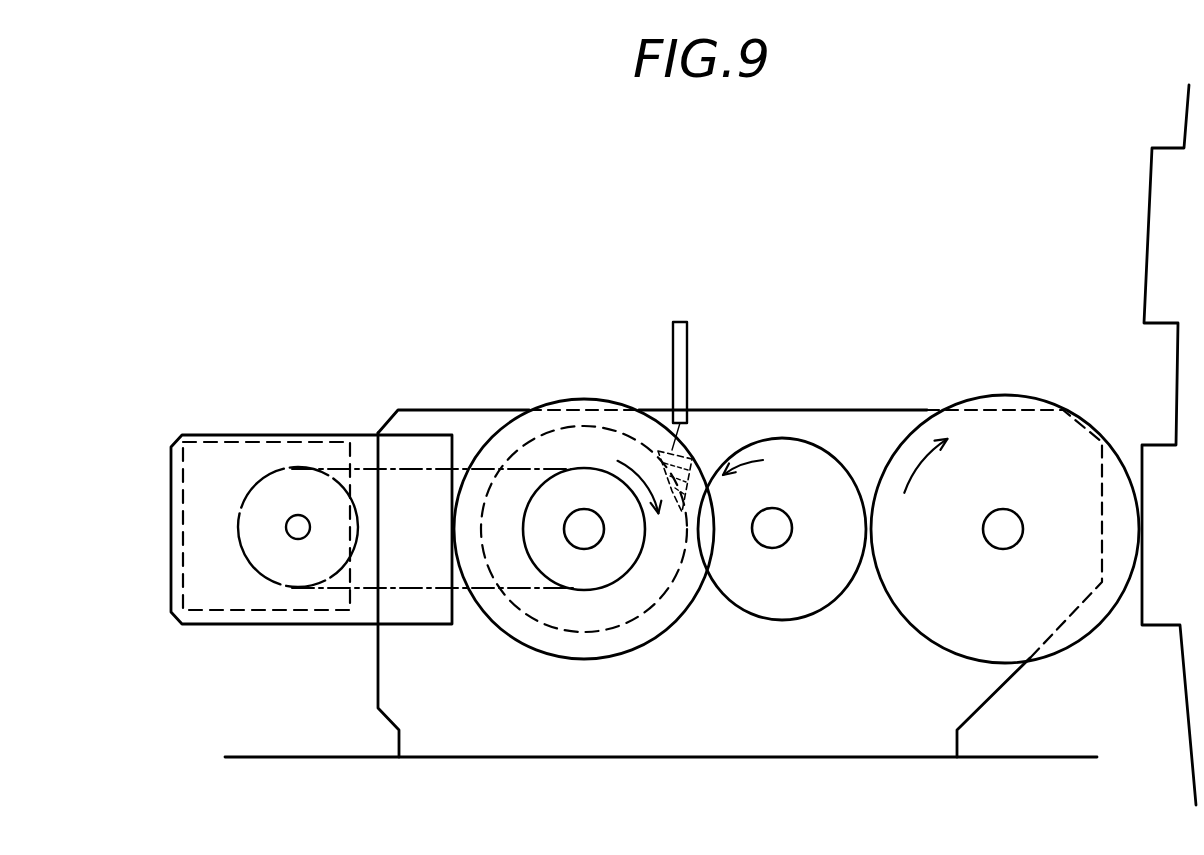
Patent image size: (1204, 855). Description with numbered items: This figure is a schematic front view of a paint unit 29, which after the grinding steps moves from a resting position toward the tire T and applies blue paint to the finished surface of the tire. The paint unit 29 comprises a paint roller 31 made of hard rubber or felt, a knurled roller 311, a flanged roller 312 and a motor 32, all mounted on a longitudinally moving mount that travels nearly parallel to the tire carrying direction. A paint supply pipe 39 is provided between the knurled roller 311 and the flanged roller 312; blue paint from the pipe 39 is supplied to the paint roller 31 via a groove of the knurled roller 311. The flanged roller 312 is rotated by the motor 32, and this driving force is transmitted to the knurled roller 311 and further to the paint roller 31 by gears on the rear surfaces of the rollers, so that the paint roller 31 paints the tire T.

The paint unit 29 is at (362, 313).
The motor 32 is at (250, 450).
The flanged roller 312 is at (583, 417).
The paint supply pipe 39 is at (683, 348).
The knurled roller 311 is at (806, 470).
The paint roller 31 is at (1018, 428).
The tire T is at (1167, 222).